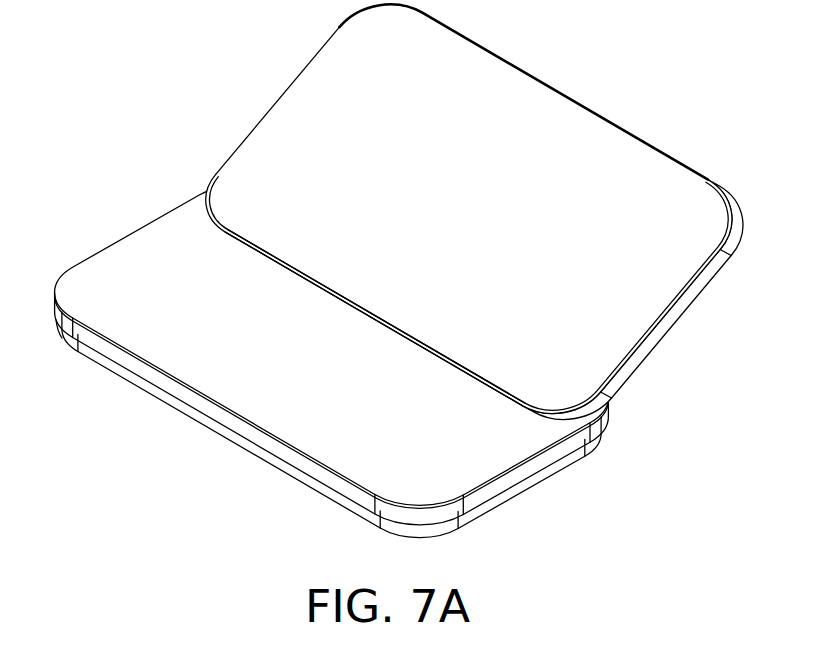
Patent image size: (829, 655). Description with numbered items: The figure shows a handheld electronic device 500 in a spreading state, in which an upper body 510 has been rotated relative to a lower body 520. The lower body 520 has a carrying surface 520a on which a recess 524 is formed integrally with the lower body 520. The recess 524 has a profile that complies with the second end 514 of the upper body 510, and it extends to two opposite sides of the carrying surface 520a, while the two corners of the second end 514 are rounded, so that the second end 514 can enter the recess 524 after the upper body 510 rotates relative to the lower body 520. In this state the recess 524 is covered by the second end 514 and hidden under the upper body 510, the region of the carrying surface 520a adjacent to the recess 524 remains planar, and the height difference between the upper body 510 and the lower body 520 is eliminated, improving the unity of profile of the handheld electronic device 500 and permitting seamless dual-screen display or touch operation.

The handheld electronic device 500 is at (399, 291).
The upper body 510 is at (618, 157).
The second end 514 is at (508, 407).
The lower body 520 is at (267, 454).
The carrying surface 520a is at (163, 265).
The recess 524 is at (278, 244).